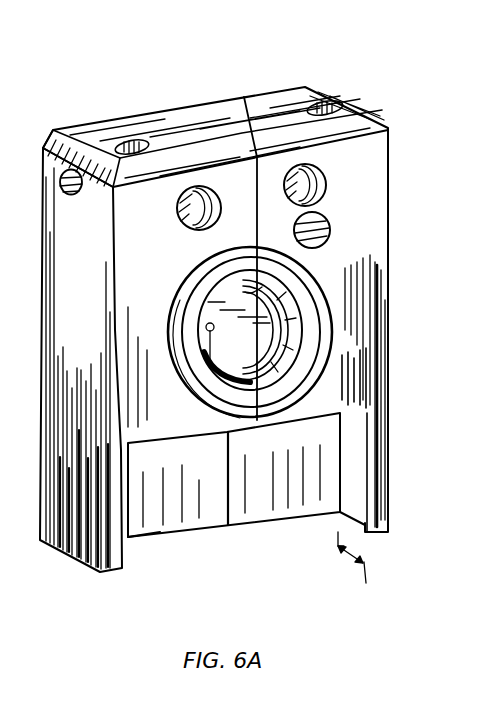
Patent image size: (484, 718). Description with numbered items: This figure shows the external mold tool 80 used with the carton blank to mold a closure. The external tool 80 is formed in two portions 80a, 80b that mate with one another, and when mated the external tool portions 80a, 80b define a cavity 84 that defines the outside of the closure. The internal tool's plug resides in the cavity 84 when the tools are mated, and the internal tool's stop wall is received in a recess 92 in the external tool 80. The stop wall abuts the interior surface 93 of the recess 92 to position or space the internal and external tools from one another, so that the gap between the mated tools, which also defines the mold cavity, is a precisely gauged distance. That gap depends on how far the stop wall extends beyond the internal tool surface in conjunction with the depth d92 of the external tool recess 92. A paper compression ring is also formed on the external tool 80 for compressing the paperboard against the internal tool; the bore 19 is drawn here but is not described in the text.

The external tool 80 is at (244, 76).
The external tool portion 80a is at (157, 107).
The external tool portion 80b is at (327, 84).
The cavity 84 is at (327, 221).
The bore / sleeve opening 19 is at (324, 288).
The interior surface of the recess 93 is at (216, 470).
The recess 92 is at (325, 522).
The depth of the external tool recess d92 is at (368, 553).